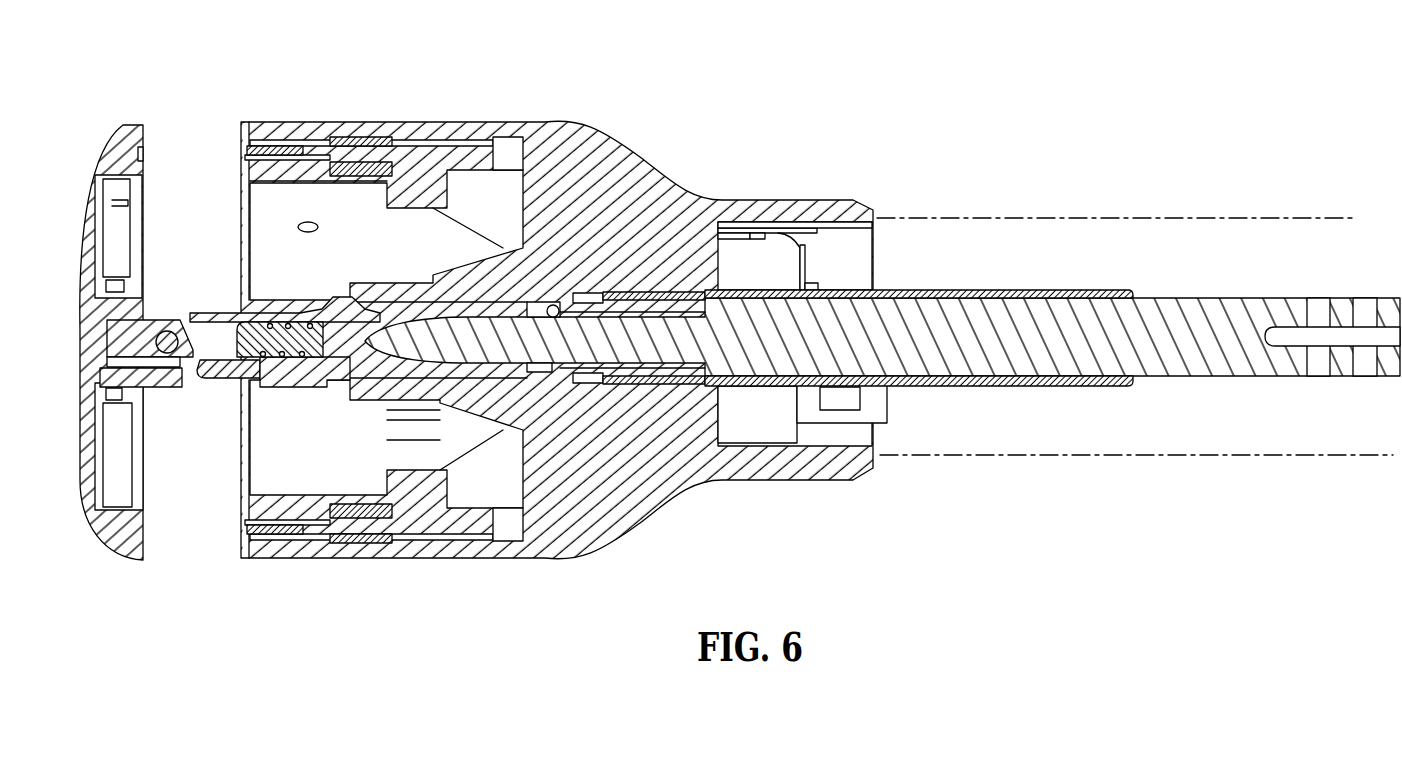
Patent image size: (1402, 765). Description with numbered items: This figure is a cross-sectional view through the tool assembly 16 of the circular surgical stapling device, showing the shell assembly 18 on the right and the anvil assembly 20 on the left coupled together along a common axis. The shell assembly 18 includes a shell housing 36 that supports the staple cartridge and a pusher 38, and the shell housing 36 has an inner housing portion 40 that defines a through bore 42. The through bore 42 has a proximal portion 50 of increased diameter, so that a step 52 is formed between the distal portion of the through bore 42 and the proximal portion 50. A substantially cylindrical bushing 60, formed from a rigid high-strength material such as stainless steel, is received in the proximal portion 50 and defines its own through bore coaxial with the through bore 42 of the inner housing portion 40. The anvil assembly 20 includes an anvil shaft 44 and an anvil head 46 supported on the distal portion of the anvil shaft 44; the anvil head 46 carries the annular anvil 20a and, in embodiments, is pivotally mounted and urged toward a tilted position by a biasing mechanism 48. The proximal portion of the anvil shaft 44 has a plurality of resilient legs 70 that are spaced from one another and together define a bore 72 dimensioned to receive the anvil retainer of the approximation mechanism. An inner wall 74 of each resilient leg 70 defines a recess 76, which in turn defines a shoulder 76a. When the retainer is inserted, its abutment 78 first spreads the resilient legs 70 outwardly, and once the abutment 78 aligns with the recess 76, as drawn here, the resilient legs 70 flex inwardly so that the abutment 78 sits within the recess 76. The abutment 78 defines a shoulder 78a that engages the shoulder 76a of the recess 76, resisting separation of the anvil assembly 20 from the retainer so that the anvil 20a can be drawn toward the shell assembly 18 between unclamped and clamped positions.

The tool assembly 16 is at (243, 110).
The shell assembly 18 is at (571, 121).
The anvil assembly 20 is at (100, 142).
The anvil 20a is at (143, 152).
The shell housing 36 is at (407, 282).
The pusher 38 is at (407, 132).
The inner housing portion 40 is at (457, 137).
The through bore 42 is at (490, 368).
The anvil shaft 44 is at (324, 294).
The anvil head 46 is at (85, 223).
The biasing mechanism 48 is at (212, 390).
The proximal portion 50 is at (655, 370).
The step 52 is at (583, 292).
The bushing 60 is at (957, 290).
The resilient legs 70 is at (633, 297).
The bore 72 is at (557, 308).
The inner wall 74 is at (694, 335).
The recess 76 is at (705, 313).
The shoulder 76a is at (760, 300).
The abutment 78 is at (722, 372).
The shoulder 78a is at (740, 378).